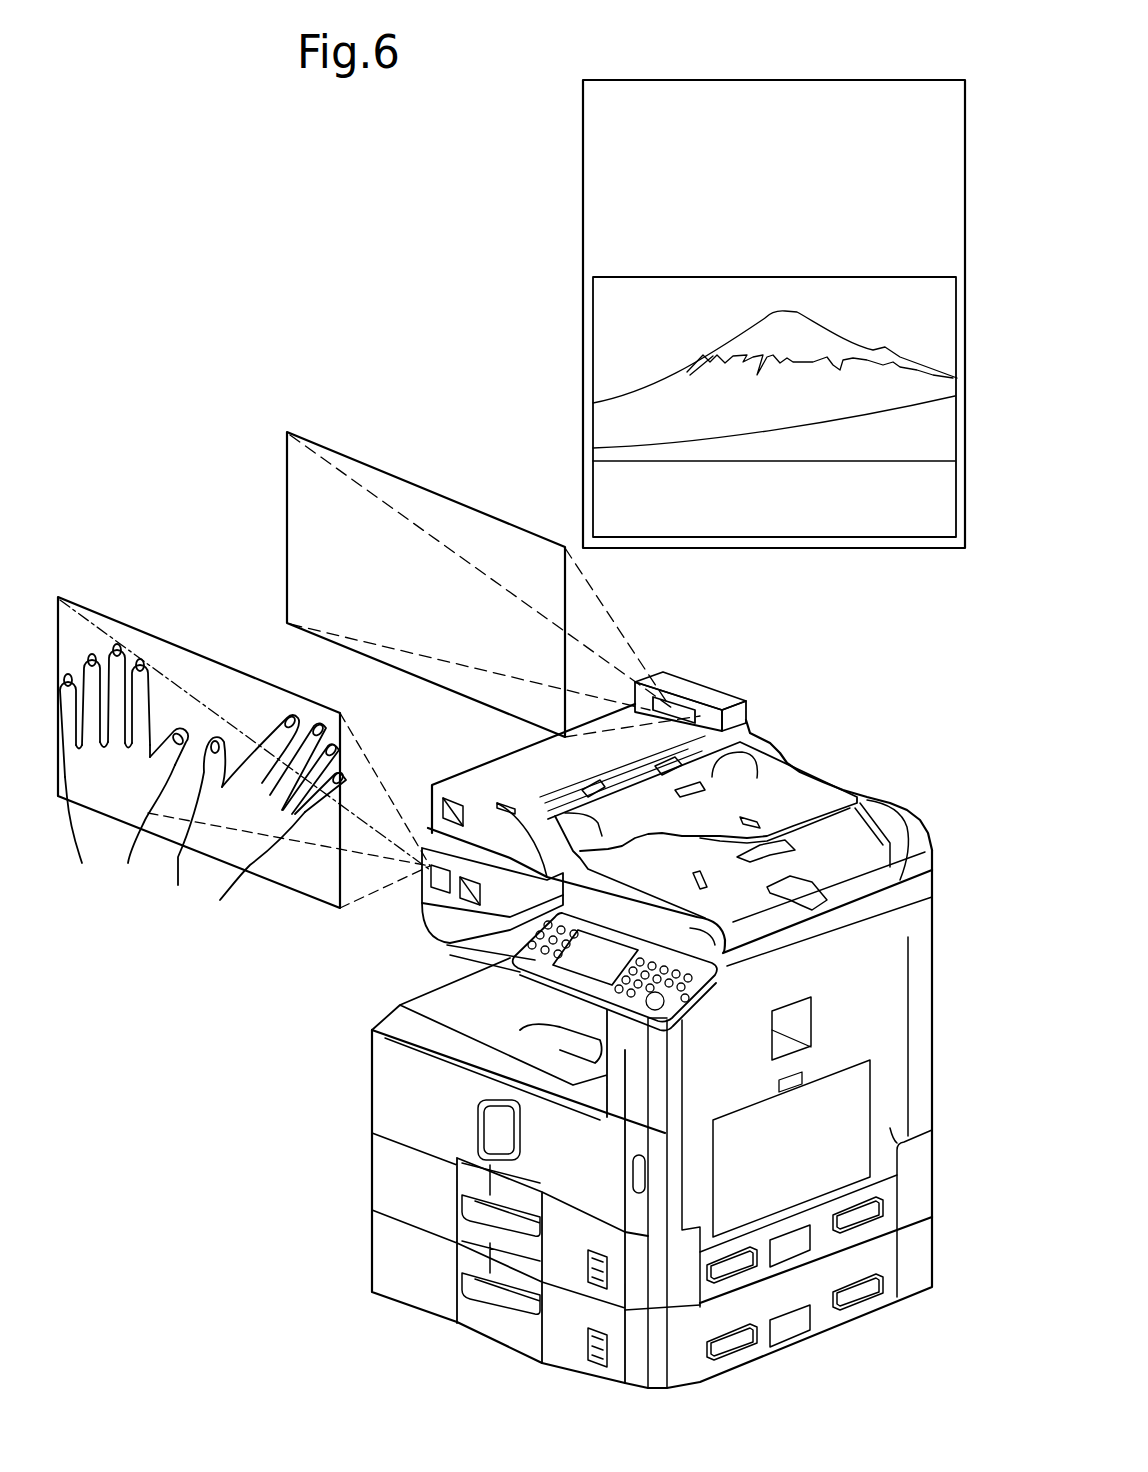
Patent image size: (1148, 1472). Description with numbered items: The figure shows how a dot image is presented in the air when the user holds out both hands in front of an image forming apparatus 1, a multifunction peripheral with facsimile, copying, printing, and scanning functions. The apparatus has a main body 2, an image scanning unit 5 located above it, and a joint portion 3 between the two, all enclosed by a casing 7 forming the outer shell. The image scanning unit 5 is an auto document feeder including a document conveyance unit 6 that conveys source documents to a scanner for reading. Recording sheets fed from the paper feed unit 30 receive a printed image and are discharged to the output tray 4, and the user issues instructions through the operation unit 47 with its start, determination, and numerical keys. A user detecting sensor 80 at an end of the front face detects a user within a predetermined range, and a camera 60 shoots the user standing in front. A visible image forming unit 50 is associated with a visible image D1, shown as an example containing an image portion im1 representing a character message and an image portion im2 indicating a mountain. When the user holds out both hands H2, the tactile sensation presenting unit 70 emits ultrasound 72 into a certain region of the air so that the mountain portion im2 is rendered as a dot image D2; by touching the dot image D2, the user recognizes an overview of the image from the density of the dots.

The image forming apparatus 1 is at (848, 655).
The main body 2 is at (940, 1090).
The joint portion 3 is at (645, 1090).
The output tray 4 is at (425, 1003).
The image scanning unit 5 is at (940, 900).
The document conveyance unit 6 is at (822, 750).
The casing 7 is at (895, 1130).
The paper feed unit 30 is at (355, 1088).
The operation unit 47 is at (535, 955).
The visible image forming unit 50 is at (677, 680).
The camera 60 is at (422, 790).
The tactile sensation presenting unit 70 is at (432, 886).
The ultrasound 72 is at (358, 700).
The user detecting sensor 80 is at (466, 897).
The image portion representing a character message im1 is at (593, 165).
The image portion indicating the mountain im2 is at (593, 372).
The both hands H2 is at (147, 900).
The visible image D1 is at (287, 487).
The dot image D2 is at (137, 625).